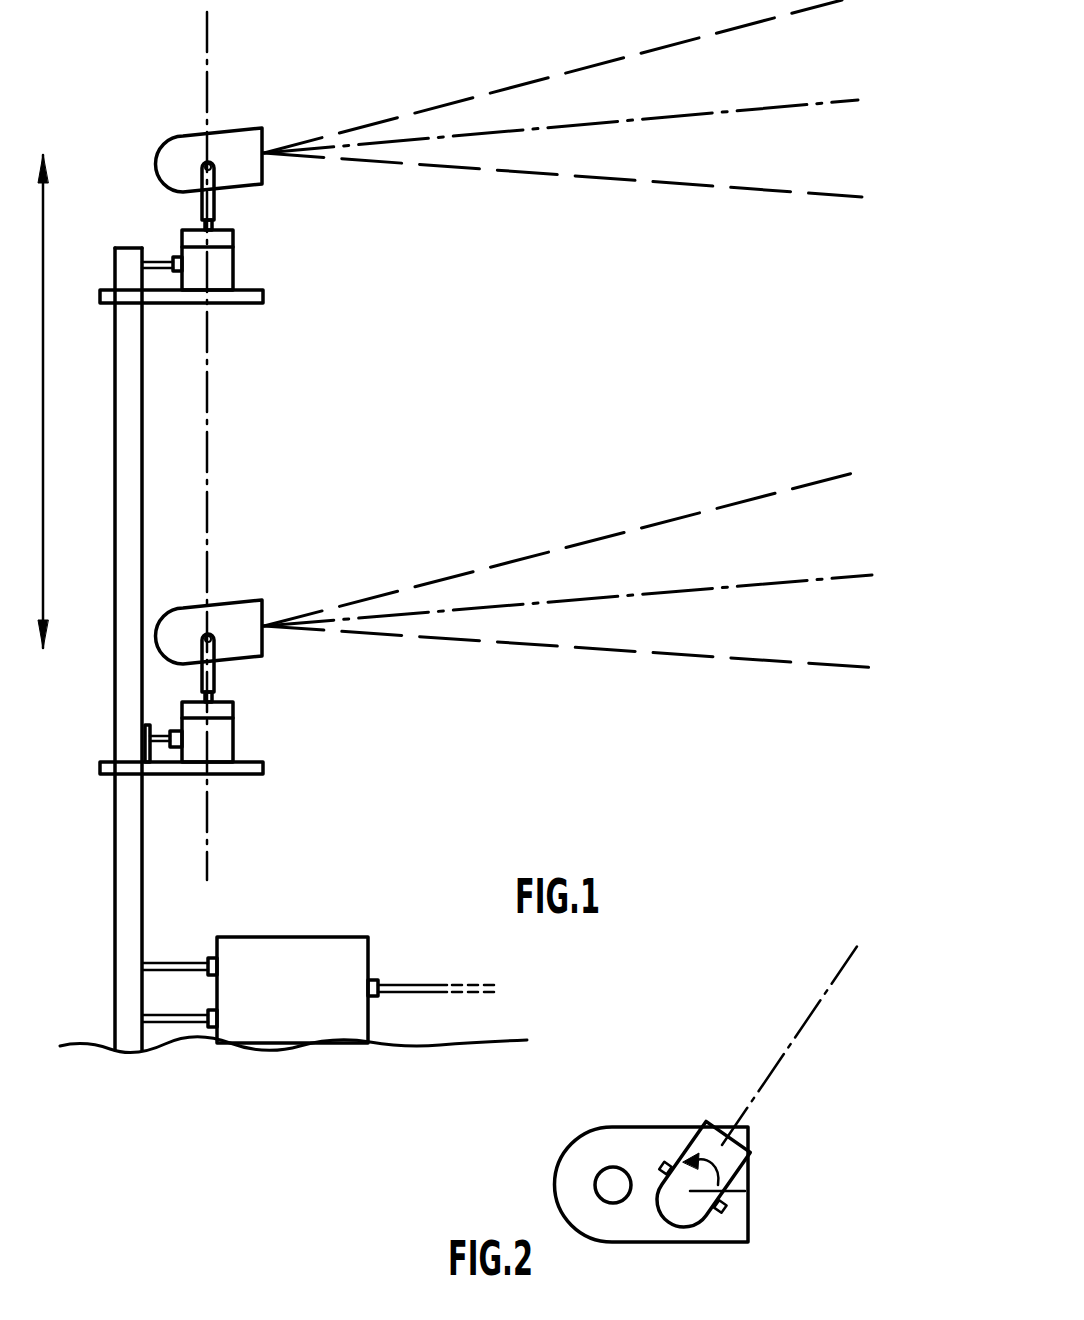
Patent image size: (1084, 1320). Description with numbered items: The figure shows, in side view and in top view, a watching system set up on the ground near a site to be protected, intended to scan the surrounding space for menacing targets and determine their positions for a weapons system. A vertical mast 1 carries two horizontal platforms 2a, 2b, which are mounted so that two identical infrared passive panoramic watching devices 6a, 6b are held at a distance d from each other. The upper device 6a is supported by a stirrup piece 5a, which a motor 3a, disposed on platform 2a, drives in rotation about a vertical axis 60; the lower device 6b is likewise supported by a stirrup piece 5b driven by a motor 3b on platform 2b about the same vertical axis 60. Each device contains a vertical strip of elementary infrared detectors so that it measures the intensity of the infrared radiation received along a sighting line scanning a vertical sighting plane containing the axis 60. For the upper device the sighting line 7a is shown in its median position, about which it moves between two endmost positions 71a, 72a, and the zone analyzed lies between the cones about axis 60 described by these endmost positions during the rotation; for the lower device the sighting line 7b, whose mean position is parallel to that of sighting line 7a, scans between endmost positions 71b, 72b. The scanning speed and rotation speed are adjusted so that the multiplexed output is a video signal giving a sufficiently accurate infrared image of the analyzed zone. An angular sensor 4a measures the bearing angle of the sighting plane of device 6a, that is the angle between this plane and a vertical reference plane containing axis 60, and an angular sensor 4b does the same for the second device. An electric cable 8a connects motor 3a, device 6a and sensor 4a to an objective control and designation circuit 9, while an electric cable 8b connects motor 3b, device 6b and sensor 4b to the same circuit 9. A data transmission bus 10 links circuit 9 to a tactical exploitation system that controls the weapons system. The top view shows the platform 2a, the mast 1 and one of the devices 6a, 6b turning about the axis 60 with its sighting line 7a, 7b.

In FIG. 1, the vertical mast 1 is at (123, 442).
In FIG. 2, the vertical mast 1 is at (603, 1190).
In FIG. 1, the horizontal platform 2a is at (104, 299).
In FIG. 2, the horizontal platform 2a is at (588, 1160).
In FIG. 1, the horizontal platform 2b is at (102, 768).
In FIG. 1, the motor 3a is at (233, 275).
In FIG. 1, the motor 3b is at (222, 740).
In FIG. 1, the angular sensor 4a is at (233, 237).
In FIG. 1, the angular sensor 4b is at (233, 708).
In FIG. 1, the stirrup piece 5a is at (200, 208).
In FIG. 1, the stirrup piece 5b is at (203, 672).
In FIG. 1, the rotary sighting device 6a is at (172, 160).
In FIG. 2, the rotary sighting device 6a is at (685, 1214).
In FIG. 1, the rotary sighting device 6b is at (178, 620).
In FIG. 2, the rotary sighting device 6b is at (698, 1201).
In FIG. 1, the sighting line 7a is at (438, 140).
In FIG. 2, the sighting line 7a is at (780, 1052).
In FIG. 1, the sighting line 7b is at (463, 610).
In FIG. 2, the sighting line 7b is at (788, 1043).
In FIG. 1, the endmost position of sighting line 71a is at (535, 80).
In FIG. 1, the endmost position of sighting line 72a is at (594, 183).
In FIG. 1, the endmost position of sighting line 71b is at (585, 541).
In FIG. 1, the endmost position of sighting line 72b is at (586, 650).
In FIG. 1, the electric cable 8a is at (160, 258).
In FIG. 1, the electric cable 8b is at (147, 725).
In FIG. 1, the objective control and designation circuit 9 is at (295, 962).
In FIG. 1, the data transmission bus 10 is at (430, 982).
In FIG. 1, the vertical axis 60 is at (208, 43).
In FIG. 2, the vertical axis 60 is at (745, 1191).
In FIG. 1, the distance d is at (37, 401).